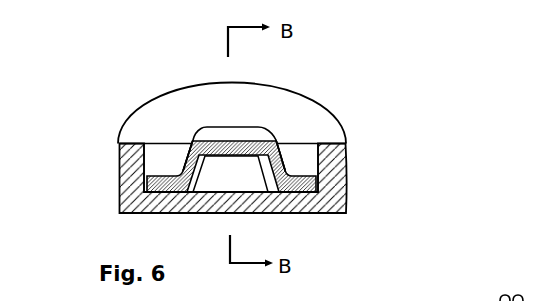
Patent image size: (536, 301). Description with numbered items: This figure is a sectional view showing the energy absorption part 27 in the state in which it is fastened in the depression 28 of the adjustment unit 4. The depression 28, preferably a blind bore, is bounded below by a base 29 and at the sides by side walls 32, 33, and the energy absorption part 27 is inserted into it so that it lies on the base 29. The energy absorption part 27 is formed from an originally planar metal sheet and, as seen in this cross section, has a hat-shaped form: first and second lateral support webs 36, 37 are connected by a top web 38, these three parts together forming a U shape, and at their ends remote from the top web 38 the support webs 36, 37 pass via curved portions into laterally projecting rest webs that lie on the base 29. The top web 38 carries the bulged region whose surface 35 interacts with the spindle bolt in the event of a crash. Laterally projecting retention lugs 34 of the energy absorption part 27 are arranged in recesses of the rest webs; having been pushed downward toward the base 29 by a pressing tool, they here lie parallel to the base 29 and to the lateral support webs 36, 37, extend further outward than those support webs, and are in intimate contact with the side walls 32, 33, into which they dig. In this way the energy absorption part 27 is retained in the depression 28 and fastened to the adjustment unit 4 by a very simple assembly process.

The adjustment unit 4 is at (348, 175).
The energy absorption part 27 is at (287, 151).
The depression 28 is at (245, 180).
The base 29 is at (212, 181).
The side wall 32 is at (157, 159).
The side wall 33 is at (344, 143).
The retention lug 34 is at (125, 195).
The surface 35 is at (244, 134).
The first lateral support web 36 is at (184, 168).
The second lateral support web 37 is at (317, 155).
The top web 38 is at (223, 143).